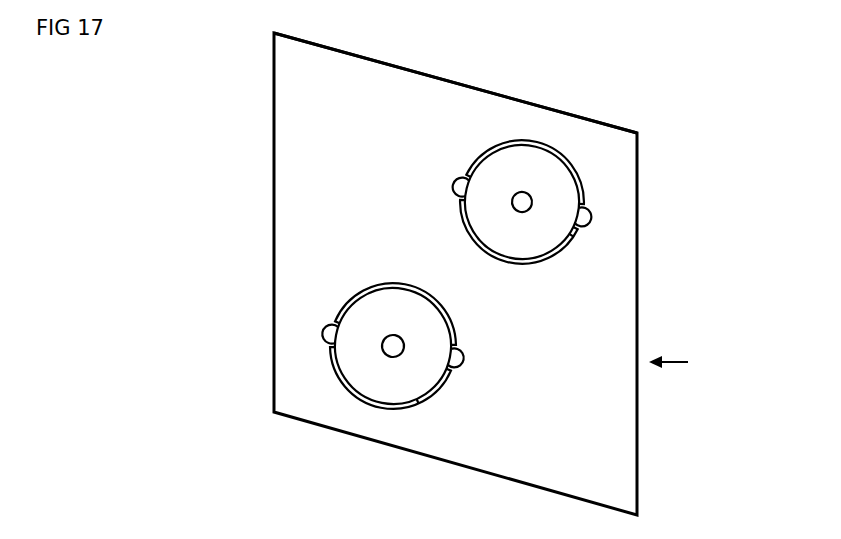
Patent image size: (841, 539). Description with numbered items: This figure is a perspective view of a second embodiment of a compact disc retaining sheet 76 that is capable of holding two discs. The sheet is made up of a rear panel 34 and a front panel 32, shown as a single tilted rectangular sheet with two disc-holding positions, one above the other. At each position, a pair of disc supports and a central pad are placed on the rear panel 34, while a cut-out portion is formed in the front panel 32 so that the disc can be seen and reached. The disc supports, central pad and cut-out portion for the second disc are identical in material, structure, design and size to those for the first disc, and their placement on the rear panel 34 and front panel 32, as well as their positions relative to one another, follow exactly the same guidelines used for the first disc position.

The front panel 32 is at (628, 321).
The rear panel 34 is at (638, 143).
The compact disc retaining sheet 76 is at (685, 364).